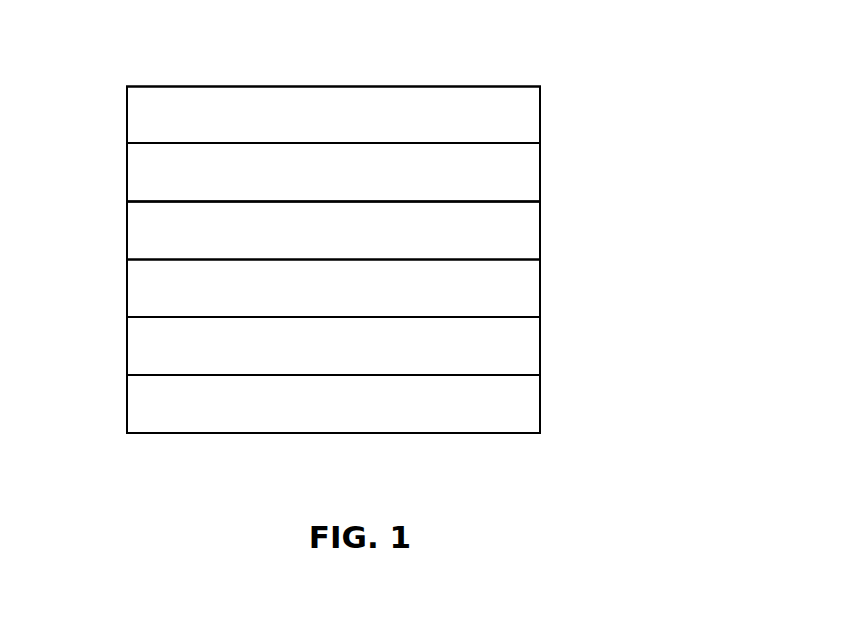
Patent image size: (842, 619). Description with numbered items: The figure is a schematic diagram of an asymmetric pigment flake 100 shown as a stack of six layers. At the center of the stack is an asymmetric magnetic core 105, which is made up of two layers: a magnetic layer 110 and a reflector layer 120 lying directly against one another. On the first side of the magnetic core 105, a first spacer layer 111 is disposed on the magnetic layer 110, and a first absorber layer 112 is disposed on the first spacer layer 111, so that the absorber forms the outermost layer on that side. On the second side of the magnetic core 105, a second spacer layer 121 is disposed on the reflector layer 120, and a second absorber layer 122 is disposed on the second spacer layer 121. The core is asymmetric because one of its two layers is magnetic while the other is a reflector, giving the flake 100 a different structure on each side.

The asymmetric flake 100 is at (527, 55).
The asymmetric magnetic core 105 is at (548, 208).
The magnetic layer 110 is at (127, 301).
The first spacer layer 111 is at (127, 358).
The first absorber layer 112 is at (127, 418).
The reflector layer 120 is at (127, 244).
The second spacer layer 121 is at (127, 187).
The second absorber layer 122 is at (127, 123).